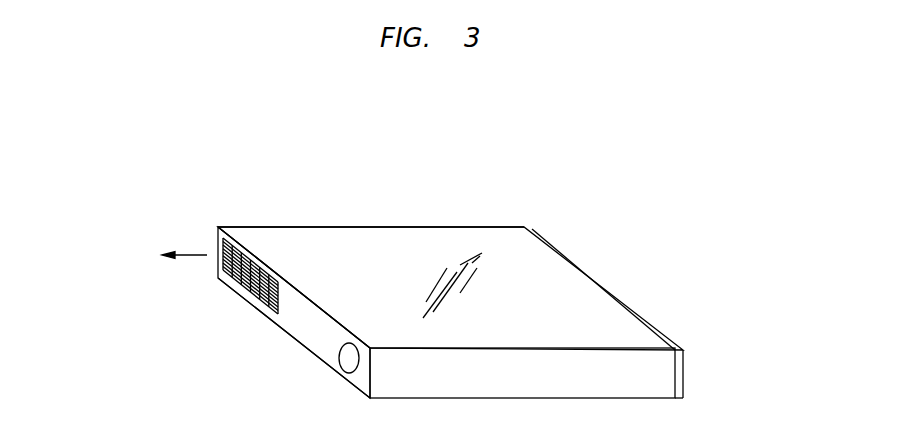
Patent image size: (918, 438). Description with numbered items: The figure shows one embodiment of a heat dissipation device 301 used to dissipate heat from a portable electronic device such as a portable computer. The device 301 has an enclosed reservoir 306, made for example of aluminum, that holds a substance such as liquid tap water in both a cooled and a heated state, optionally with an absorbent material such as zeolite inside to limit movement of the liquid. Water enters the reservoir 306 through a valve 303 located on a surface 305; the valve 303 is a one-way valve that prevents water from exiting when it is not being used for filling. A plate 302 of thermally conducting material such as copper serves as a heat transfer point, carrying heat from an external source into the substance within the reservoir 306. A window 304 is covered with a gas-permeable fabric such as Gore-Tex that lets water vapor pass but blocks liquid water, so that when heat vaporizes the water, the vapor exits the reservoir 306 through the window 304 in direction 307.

The heat dissipation device 301 is at (617, 160).
The plate 302 is at (615, 298).
The valve 303 is at (338, 373).
The window 304 is at (257, 302).
The surface 305 is at (302, 333).
The reservoir 306 is at (437, 232).
The direction 307 is at (190, 257).